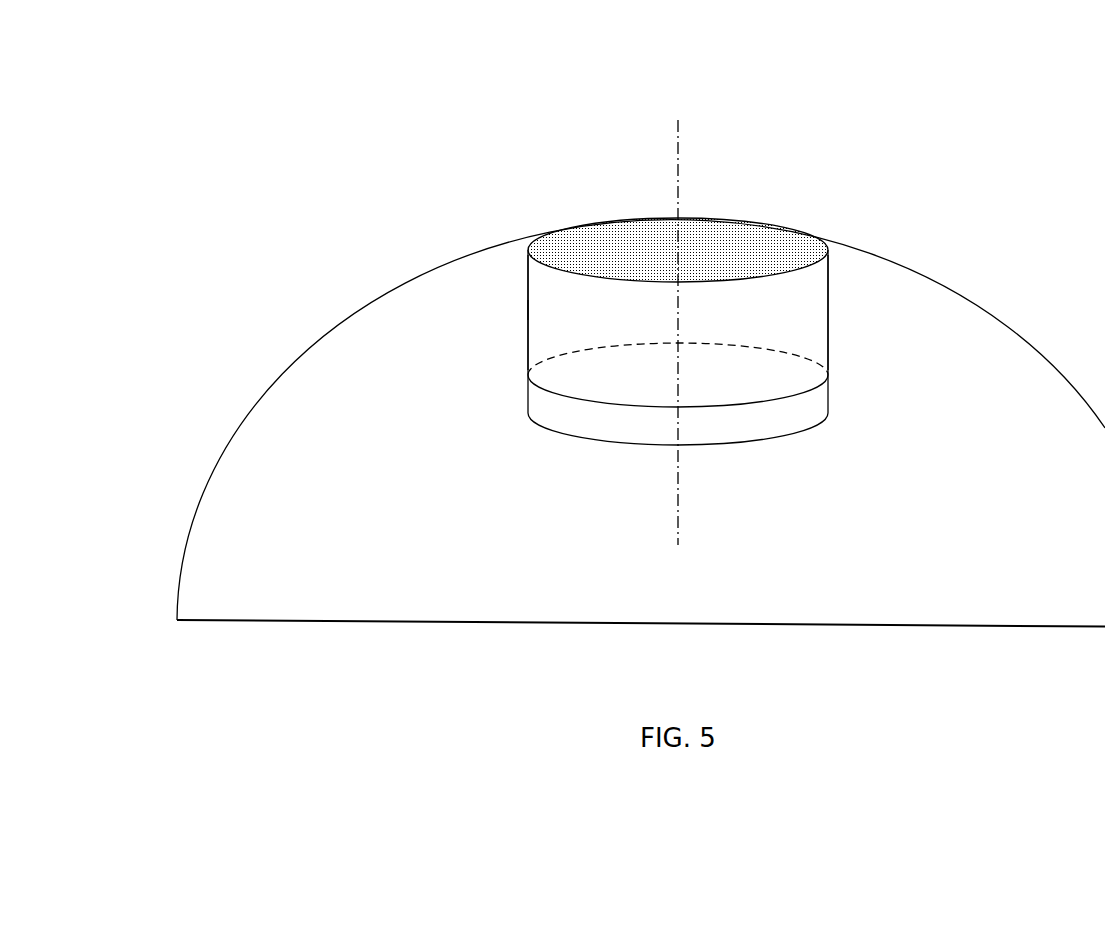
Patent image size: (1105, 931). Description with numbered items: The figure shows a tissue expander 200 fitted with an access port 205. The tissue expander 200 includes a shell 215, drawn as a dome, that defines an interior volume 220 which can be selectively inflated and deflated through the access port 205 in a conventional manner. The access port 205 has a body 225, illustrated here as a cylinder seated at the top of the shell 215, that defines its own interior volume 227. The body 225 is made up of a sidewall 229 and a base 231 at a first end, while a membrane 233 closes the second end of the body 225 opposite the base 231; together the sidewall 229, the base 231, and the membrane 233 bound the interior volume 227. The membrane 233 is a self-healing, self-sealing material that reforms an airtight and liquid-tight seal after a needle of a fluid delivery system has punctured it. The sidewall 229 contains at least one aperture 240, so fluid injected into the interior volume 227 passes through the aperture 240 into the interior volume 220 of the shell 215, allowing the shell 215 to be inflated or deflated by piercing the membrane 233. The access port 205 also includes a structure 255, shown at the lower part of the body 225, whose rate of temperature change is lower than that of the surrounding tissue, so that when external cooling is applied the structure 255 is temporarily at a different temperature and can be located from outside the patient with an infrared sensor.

The tissue expander 200 is at (315, 118).
The access port 205 is at (828, 227).
The shell 215 is at (265, 380).
The interior volume 220 is at (253, 507).
The body 225 is at (830, 320).
The interior volume 227 is at (798, 327).
The sidewall 229 is at (528, 337).
The base 231 is at (548, 381).
The membrane 233 is at (610, 235).
The aperture 240 is at (525, 310).
The structure 255 is at (545, 409).